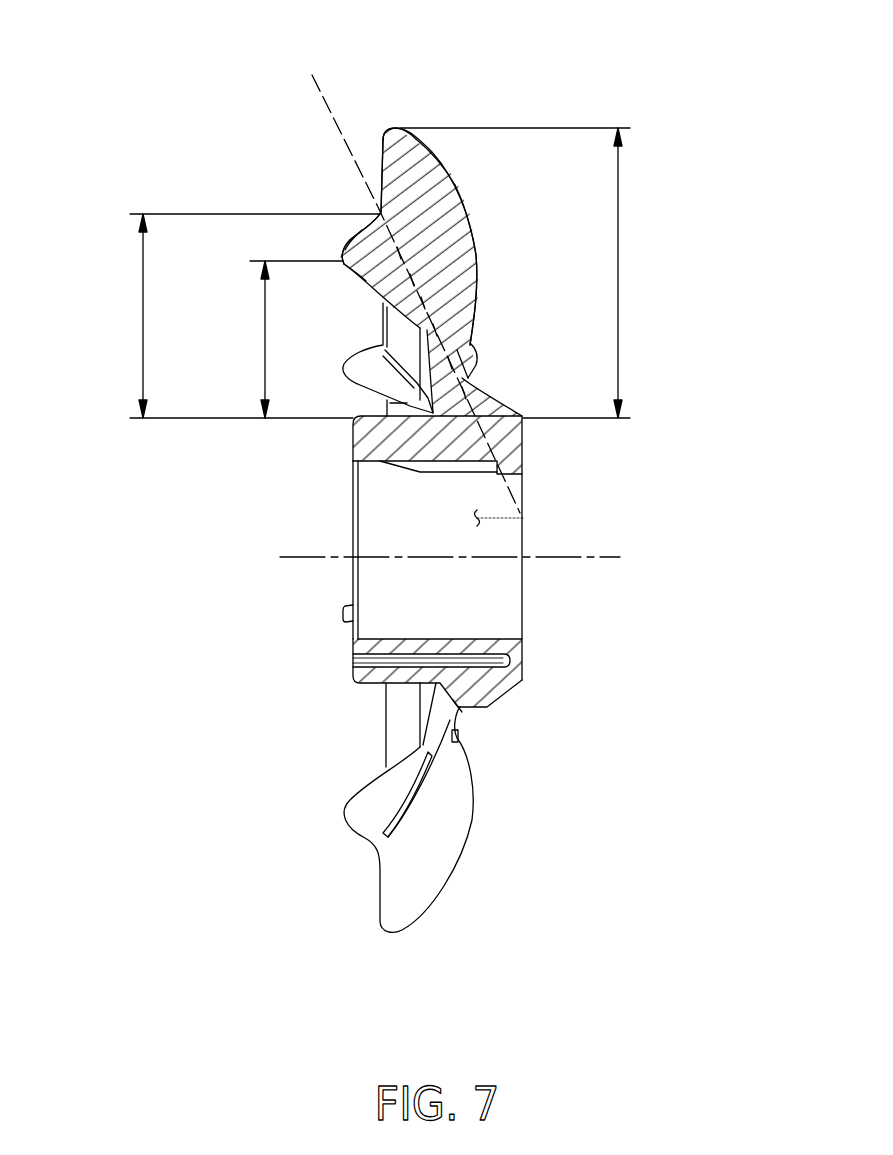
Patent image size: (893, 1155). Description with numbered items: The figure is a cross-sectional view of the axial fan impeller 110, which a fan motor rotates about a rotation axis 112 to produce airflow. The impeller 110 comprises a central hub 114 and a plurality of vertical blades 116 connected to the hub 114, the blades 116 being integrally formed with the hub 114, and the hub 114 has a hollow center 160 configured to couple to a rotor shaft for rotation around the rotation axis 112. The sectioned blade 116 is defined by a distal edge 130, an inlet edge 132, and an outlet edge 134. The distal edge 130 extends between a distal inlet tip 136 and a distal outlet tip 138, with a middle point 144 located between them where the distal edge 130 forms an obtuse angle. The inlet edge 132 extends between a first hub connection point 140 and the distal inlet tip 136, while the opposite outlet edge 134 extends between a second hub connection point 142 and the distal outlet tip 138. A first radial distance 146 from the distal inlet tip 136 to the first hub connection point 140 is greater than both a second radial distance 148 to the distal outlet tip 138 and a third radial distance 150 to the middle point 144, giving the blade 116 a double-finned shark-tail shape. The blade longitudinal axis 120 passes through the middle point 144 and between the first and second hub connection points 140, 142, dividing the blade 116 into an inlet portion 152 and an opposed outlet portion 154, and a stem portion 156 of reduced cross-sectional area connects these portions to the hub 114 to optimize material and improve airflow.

The impeller 110 is at (447, 140).
The rotation axis 112 is at (620, 557).
The central hub 114 is at (515, 645).
The vertical blade 116 is at (431, 150).
The blade longitudinal axis 120 is at (322, 80).
The distal edge 130 is at (381, 200).
The inlet edge 132 is at (476, 220).
The outlet edge 134 is at (357, 275).
The distal inlet tip 136 is at (388, 130).
The distal outlet tip 138 is at (343, 255).
The first hub connection point 140 is at (522, 413).
The second hub connection point 142 is at (478, 383).
The middle point 144 is at (380, 212).
The first radial distance 146 is at (618, 258).
The second radial distance 148 is at (265, 335).
The third radial distance 150 is at (143, 303).
The inlet portion 152 is at (440, 190).
The outlet portion 154 is at (365, 222).
The stem portion 156 is at (472, 350).
The hollow center 160 is at (523, 518).